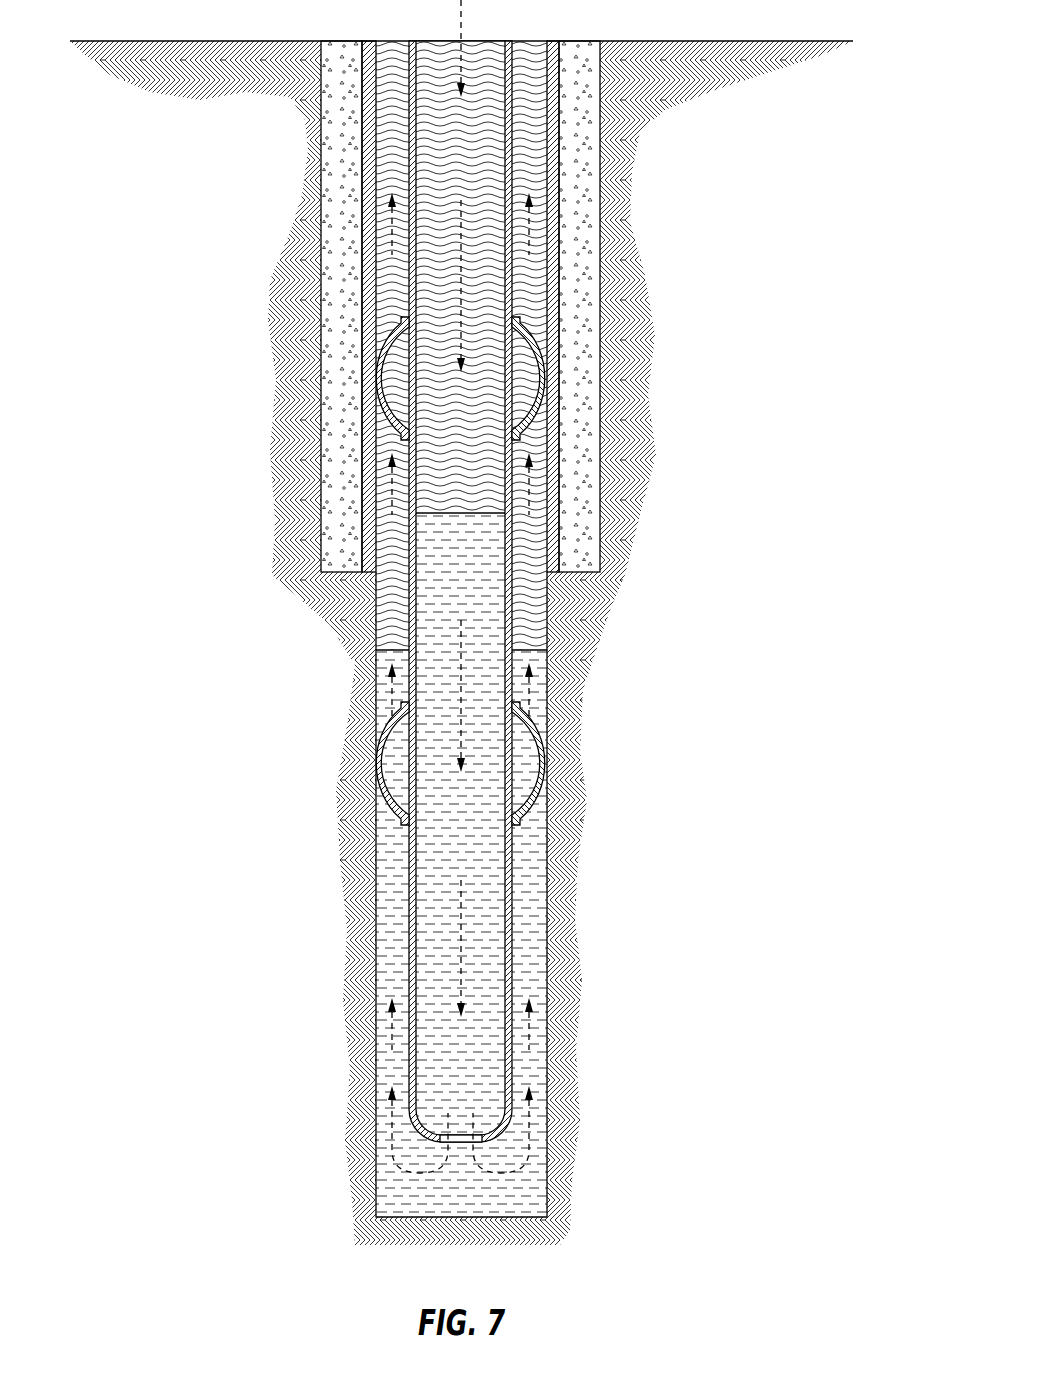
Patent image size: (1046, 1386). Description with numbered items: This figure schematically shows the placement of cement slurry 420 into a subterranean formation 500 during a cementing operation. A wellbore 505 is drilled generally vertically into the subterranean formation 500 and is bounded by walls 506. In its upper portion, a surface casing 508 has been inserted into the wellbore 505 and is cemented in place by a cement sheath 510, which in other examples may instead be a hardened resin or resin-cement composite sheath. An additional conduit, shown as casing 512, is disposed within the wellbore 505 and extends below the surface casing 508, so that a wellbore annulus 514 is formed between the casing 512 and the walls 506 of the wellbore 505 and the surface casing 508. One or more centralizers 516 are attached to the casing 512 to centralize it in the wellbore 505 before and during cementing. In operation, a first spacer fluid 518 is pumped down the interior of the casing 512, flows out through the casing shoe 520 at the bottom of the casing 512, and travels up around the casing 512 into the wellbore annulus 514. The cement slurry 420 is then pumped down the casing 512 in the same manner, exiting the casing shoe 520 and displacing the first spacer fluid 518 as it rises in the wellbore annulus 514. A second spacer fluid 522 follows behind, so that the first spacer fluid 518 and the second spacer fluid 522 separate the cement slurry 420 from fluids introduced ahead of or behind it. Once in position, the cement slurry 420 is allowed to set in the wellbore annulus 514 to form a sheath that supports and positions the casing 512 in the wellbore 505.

The cement slurry 420 is at (495, 920).
The subterranean formation 500 is at (345, 868).
The wellbore 505 is at (316, 173).
The walls 506 is at (547, 633).
The surface casing 508 is at (560, 182).
The cement sheath 510 is at (575, 270).
The casing 512 is at (514, 775).
The wellbore annulus 514 is at (387, 933).
The centralizers 516 is at (386, 345).
The first spacer fluid 518 is at (385, 575).
The casing shoe 520 is at (490, 1142).
The second spacer fluid 522 is at (440, 53).